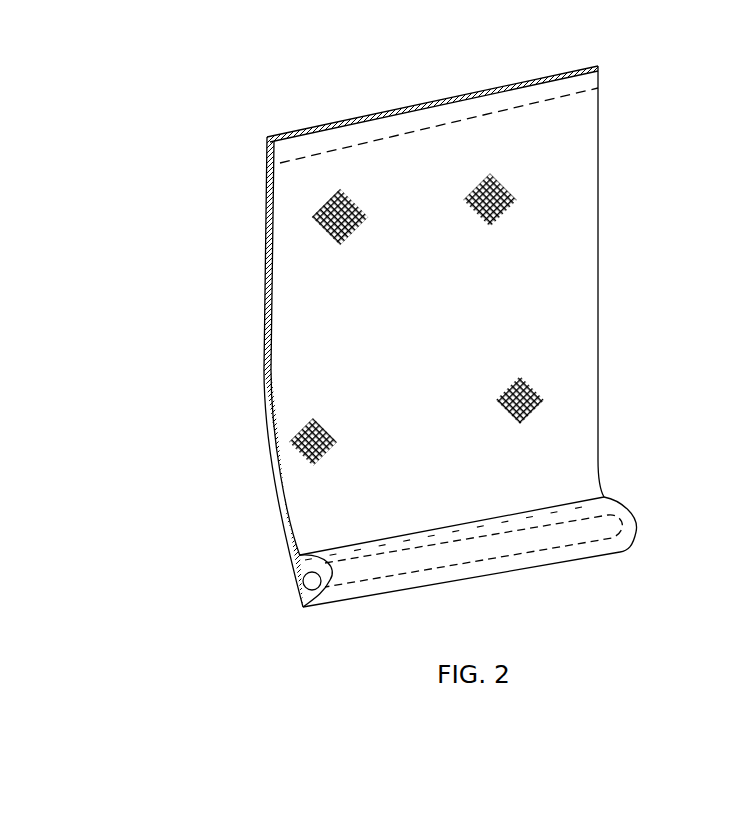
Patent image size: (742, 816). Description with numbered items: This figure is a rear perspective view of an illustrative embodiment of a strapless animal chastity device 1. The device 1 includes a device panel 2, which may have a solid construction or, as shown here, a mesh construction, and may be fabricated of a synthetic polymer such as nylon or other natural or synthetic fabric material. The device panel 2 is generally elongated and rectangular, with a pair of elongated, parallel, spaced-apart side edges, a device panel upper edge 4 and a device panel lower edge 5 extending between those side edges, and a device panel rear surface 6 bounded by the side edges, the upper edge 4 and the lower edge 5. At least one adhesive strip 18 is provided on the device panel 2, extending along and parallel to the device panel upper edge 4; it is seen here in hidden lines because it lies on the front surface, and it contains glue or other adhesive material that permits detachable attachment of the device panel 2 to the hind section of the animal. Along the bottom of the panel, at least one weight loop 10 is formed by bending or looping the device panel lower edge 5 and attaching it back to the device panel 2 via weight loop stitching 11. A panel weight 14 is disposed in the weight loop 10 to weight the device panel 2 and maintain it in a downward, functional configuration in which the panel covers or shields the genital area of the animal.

The device 1 is at (416, 343).
The device panel 2 is at (262, 278).
The device panel upper edge 4 is at (413, 107).
The device panel lower edge 5 is at (478, 521).
The device panel rear surface 6 is at (576, 248).
The weight loop 10 is at (468, 560).
The weight loop stitching 11 is at (385, 540).
The panel weight 14 is at (535, 538).
The adhesive strip 18 is at (532, 98).